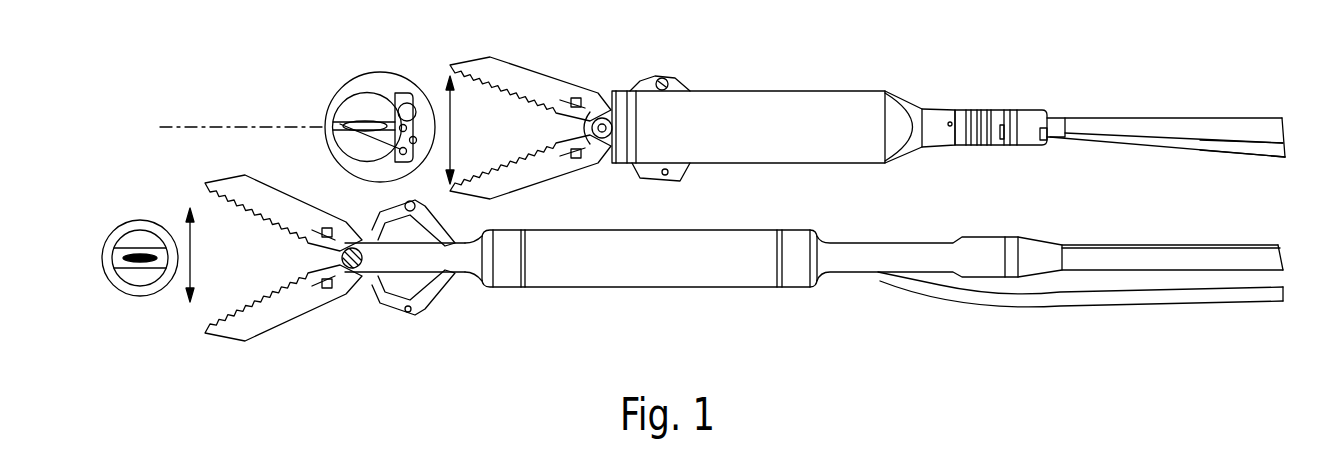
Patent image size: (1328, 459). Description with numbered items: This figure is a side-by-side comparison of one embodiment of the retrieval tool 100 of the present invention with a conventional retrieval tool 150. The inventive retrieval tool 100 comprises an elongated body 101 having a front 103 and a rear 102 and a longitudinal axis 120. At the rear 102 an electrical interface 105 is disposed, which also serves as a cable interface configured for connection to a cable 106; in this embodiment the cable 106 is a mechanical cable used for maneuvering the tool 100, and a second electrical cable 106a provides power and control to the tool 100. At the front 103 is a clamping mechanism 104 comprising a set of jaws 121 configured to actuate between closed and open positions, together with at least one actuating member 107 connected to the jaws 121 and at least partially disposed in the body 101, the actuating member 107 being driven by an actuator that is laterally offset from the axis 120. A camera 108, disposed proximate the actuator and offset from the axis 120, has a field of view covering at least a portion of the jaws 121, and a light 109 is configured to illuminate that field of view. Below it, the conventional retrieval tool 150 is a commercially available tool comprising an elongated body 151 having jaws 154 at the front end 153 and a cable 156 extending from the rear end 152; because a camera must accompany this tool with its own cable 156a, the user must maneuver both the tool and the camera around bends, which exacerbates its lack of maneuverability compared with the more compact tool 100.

The retrieval tool 100 is at (729, 60).
The elongated body 101 is at (838, 98).
The rear 102 is at (900, 112).
The front 103 is at (602, 116).
The clamping mechanism 104 is at (560, 90).
The electrical interface 105 is at (996, 118).
The cable 106 is at (1193, 145).
The second electrical cable 106a is at (1266, 125).
The actuating member 107 is at (648, 78).
The camera 108 is at (406, 106).
The light 109 is at (335, 122).
The longitudinal axis 120 is at (232, 125).
The jaws 121 is at (500, 56).
The conventional retrieval tool 150 is at (556, 298).
The elongated body 151 is at (683, 275).
The rear end 152 is at (818, 289).
The front end 153 is at (502, 288).
The jaws 154 is at (293, 312).
The cable 156 is at (1108, 262).
The camera cable 156a is at (1193, 300).